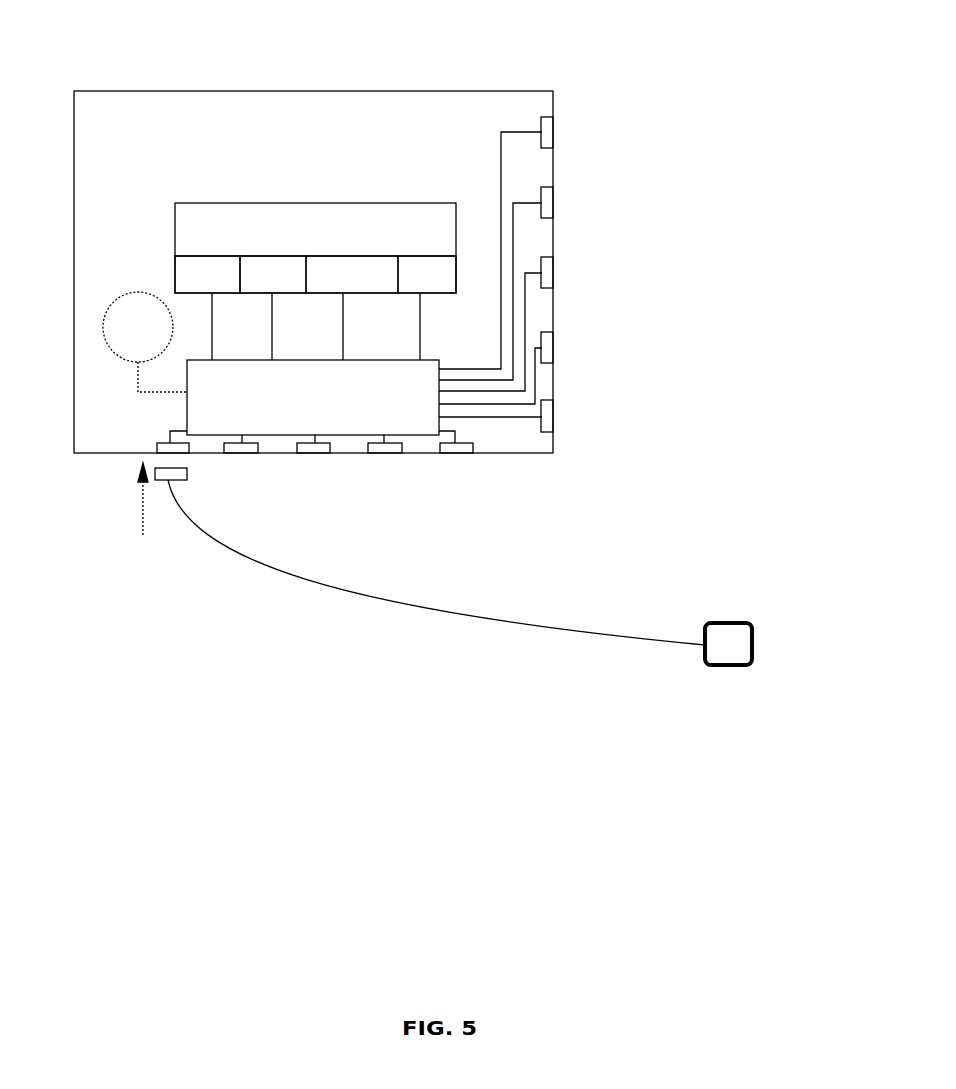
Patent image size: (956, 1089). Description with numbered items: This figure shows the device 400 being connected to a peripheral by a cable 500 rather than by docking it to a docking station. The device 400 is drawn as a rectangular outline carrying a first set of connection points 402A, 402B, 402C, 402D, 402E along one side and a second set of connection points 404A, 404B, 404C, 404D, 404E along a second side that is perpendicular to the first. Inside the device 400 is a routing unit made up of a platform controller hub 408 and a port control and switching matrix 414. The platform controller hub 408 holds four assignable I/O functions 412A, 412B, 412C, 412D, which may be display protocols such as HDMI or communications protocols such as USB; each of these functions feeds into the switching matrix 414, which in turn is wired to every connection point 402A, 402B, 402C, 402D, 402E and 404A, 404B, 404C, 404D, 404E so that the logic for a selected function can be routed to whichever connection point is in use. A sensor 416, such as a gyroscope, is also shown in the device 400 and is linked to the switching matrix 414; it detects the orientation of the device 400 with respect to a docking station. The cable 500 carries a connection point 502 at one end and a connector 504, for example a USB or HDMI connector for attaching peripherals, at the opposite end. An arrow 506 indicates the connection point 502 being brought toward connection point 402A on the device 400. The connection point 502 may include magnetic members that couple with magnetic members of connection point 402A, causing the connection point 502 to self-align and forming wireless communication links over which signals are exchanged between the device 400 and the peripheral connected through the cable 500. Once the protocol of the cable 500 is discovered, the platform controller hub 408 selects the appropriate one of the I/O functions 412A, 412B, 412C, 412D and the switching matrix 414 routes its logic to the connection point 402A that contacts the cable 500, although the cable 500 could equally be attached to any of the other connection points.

The device 400 is at (295, 91).
The platform controller hub 408 is at (315, 248).
The I/O function 412A is at (207, 308).
The I/O function 412B is at (273, 308).
The I/O function 412C is at (352, 308).
The I/O function 412D is at (427, 308).
The port control and switching matrix 414 is at (364, 283).
The sensor 416 is at (145, 342).
The connection point 404A is at (545, 417).
The connection point 404B is at (545, 348).
The connection point 404C is at (545, 273).
The connection point 404D is at (545, 203).
The connection point 404E is at (545, 132).
The connection point 402A is at (165, 446).
The connection point 402B is at (241, 455).
The connection point 402C is at (317, 453).
The connection point 402D is at (367, 448).
The connection point 402E is at (437, 448).
The cable 500 is at (370, 618).
The connection point 502 is at (160, 482).
The connector 504 is at (752, 632).
The arrow 506 is at (143, 535).